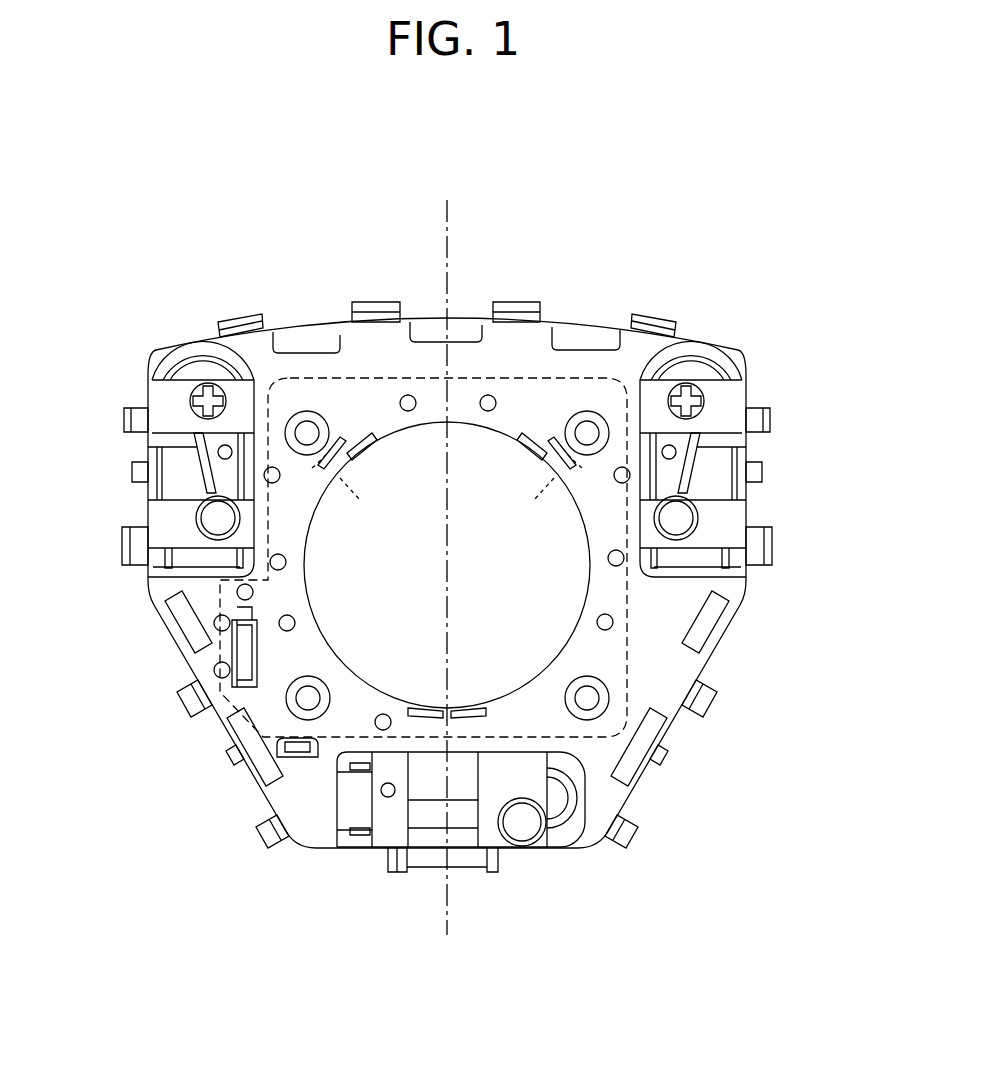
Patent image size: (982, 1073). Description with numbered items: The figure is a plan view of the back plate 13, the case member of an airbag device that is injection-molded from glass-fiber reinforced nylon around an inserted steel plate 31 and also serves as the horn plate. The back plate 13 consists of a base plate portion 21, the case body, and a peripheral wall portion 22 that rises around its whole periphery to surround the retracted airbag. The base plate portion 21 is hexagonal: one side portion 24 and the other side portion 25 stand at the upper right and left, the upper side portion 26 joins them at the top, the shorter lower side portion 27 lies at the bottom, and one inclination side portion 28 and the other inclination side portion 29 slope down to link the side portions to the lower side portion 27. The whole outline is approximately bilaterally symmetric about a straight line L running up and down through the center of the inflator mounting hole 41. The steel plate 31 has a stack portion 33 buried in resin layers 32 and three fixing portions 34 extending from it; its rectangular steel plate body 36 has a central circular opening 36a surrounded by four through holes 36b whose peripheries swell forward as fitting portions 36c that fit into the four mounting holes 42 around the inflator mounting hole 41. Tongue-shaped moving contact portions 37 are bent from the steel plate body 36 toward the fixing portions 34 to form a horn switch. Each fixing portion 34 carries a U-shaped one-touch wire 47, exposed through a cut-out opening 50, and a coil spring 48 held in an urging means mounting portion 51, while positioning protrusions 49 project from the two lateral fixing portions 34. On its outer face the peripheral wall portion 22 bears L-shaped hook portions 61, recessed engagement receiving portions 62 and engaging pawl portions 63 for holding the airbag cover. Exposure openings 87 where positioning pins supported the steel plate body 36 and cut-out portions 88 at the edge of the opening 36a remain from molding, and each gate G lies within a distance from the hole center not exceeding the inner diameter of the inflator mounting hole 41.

The back plate 13 is at (562, 190).
The straight line L is at (464, 567).
The base plate portion 21 is at (680, 630).
The peripheral wall portion 22 is at (598, 832).
The one side portion 24 is at (745, 395).
The other side portion 25 is at (150, 388).
The upper side portion 26 is at (626, 337).
The lower side portion 27 is at (345, 855).
The one inclination side portion 28 is at (630, 795).
The other inclination side portion 29 is at (265, 795).
The steel plate 31 is at (700, 582).
The resin layer 32 is at (613, 603).
The stack portion 33 is at (620, 685).
The fixing portion 34 is at (150, 500).
The steel plate body 36 is at (347, 378).
The opening 36a is at (322, 482).
The through hole 36b is at (330, 458).
The fitting portion 36c is at (352, 445).
The moving contact portion 37 is at (222, 446).
The inflator mounting hole 41 is at (305, 548).
The mounting hole 42 is at (296, 424).
The wire 47 is at (205, 395).
The coil spring 48 is at (198, 510).
The positioning protrusion 49 is at (185, 358).
The cut-out opening 50 is at (150, 508).
The urging means mounting portion 51 is at (204, 470).
The hook portion 61 is at (240, 318).
The engagement receiving portion 62 is at (306, 345).
The engaging pawl portion 63 is at (133, 472).
The exposure opening 87 is at (408, 395).
The cut-out portion 88 is at (375, 440).
The gate G is at (450, 708).